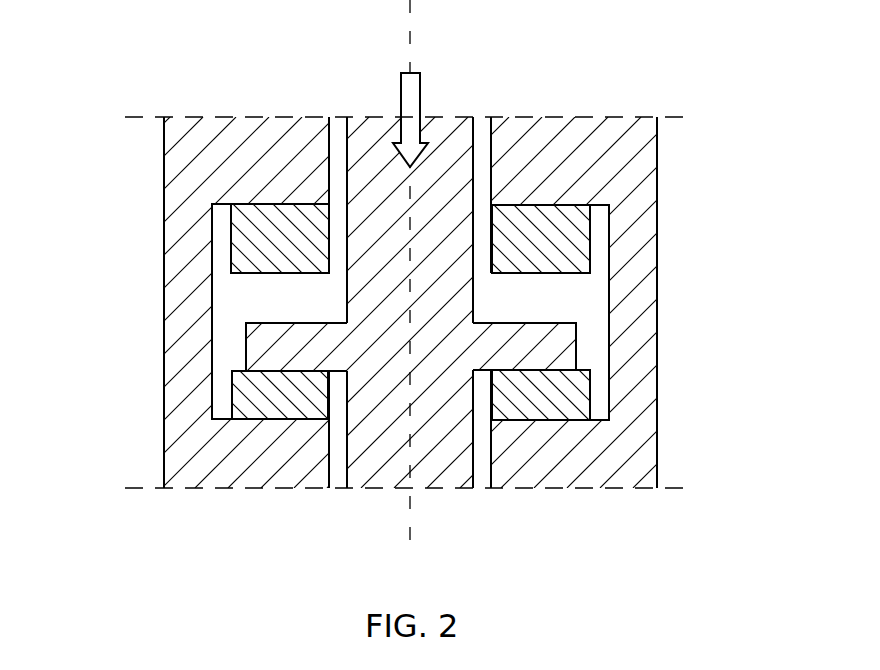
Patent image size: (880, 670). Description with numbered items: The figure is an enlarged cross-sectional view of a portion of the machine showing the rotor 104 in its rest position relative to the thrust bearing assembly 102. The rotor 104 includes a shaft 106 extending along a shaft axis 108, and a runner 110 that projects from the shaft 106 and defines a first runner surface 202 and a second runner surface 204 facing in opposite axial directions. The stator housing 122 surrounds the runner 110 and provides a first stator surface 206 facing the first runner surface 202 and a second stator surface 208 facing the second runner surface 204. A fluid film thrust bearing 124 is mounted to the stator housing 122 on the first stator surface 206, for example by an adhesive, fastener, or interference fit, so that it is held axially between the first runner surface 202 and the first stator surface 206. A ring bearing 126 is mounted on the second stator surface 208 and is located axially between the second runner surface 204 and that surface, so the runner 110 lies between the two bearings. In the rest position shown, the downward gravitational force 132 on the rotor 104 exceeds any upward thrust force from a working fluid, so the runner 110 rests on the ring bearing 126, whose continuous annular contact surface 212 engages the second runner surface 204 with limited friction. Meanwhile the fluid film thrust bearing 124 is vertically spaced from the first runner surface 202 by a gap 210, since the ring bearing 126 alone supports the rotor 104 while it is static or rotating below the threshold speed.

The thrust bearing assembly 102 is at (623, 106).
The rotor 104 is at (458, 100).
The shaft 106 is at (363, 150).
The shaft axis 108 is at (412, 207).
The runner 110 is at (260, 340).
The stator housing 122 is at (230, 152).
The fluid film thrust bearing 124 is at (240, 250).
The ring bearing 126 is at (237, 382).
The downward gravitational force 132 is at (421, 88).
The first runner surface 202 is at (268, 316).
The second runner surface 204 is at (307, 372).
The first stator surface 206 is at (275, 233).
The second stator surface 208 is at (237, 400).
The gap 210 is at (590, 273).
The contact surface 212 is at (258, 361).